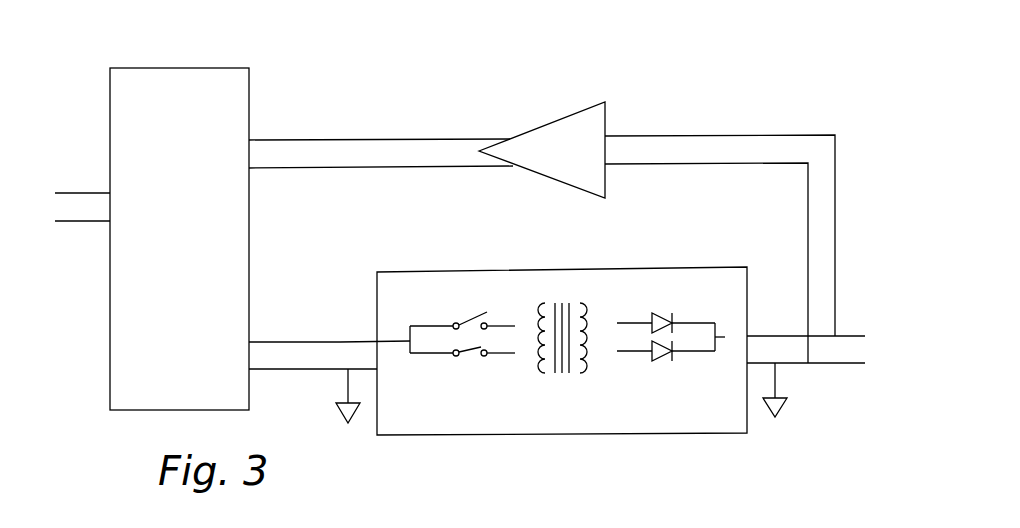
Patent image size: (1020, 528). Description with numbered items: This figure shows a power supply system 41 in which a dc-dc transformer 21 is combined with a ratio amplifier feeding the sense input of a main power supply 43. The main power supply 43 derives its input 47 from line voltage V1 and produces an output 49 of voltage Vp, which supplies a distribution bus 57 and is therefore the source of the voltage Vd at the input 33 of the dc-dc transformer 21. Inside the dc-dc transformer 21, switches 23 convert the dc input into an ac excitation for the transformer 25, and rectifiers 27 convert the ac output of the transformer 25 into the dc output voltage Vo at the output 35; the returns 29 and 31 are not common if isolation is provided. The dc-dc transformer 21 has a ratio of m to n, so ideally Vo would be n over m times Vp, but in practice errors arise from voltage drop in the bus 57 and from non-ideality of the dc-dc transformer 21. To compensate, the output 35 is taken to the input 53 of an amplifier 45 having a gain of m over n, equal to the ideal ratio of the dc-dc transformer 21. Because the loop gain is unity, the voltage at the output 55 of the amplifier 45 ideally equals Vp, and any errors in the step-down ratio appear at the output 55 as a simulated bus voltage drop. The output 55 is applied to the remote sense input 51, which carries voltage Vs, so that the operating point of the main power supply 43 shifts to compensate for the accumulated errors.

The dc-dc transformer 21 is at (386, 242).
The switches 23 is at (472, 302).
The transformer 25 is at (572, 285).
The rectifiers 27 is at (660, 300).
The return 29 is at (340, 390).
The return 31 is at (783, 388).
The input 33 is at (366, 331).
The output 35 is at (750, 325).
The power supply system 41 is at (88, 63).
The main power supply 43 is at (207, 55).
The amplifier 45 is at (563, 106).
The input 47 is at (100, 183).
The output 49 is at (258, 334).
The remote sense input 51 is at (262, 137).
The input 53 is at (620, 127).
The output 55 is at (490, 130).
The bus 57 is at (302, 325).